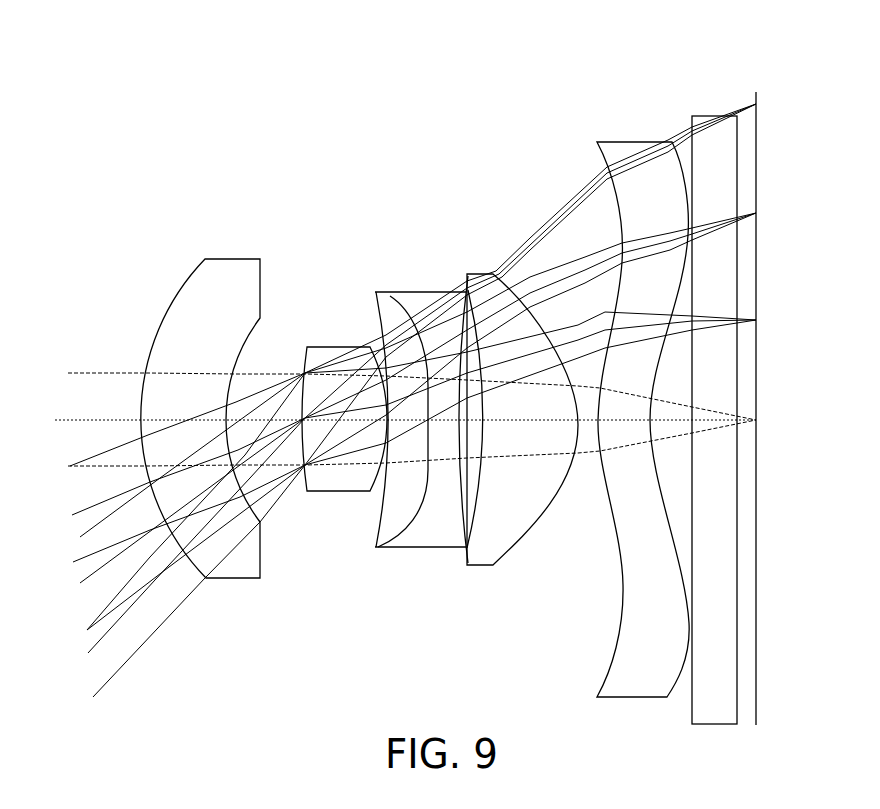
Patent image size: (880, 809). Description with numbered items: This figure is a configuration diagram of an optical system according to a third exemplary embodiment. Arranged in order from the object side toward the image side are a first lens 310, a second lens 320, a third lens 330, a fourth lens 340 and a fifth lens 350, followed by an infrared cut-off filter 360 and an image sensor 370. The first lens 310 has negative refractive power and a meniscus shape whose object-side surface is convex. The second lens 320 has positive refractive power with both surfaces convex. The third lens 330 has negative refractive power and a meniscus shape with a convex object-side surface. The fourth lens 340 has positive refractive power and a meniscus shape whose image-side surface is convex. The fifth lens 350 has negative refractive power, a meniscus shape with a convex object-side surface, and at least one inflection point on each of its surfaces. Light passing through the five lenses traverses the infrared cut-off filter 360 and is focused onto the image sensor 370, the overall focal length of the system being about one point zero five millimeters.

The first lens 310 is at (213, 268).
The second lens 320 is at (317, 355).
The third lens 330 is at (412, 300).
The fourth lens 340 is at (478, 278).
The fifth lens 350 is at (617, 147).
The infrared cut-off filter 360 is at (697, 120).
The image sensor 370 is at (757, 95).